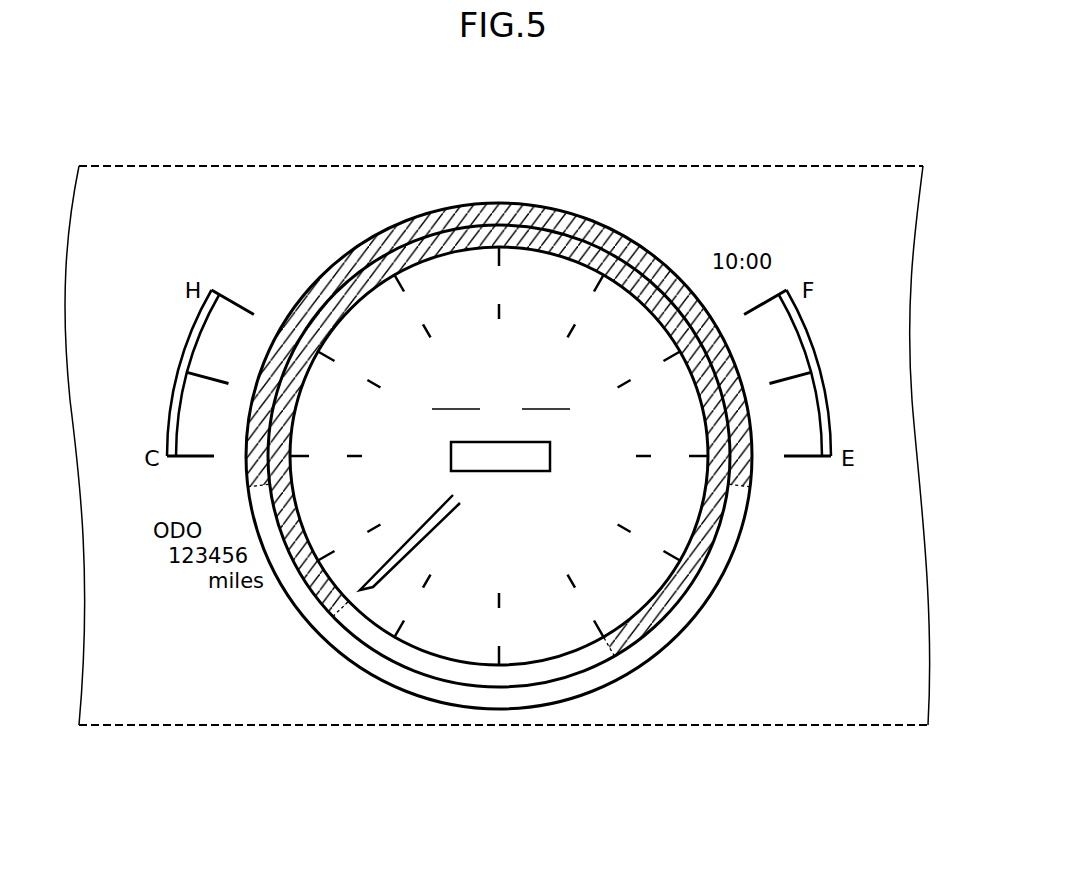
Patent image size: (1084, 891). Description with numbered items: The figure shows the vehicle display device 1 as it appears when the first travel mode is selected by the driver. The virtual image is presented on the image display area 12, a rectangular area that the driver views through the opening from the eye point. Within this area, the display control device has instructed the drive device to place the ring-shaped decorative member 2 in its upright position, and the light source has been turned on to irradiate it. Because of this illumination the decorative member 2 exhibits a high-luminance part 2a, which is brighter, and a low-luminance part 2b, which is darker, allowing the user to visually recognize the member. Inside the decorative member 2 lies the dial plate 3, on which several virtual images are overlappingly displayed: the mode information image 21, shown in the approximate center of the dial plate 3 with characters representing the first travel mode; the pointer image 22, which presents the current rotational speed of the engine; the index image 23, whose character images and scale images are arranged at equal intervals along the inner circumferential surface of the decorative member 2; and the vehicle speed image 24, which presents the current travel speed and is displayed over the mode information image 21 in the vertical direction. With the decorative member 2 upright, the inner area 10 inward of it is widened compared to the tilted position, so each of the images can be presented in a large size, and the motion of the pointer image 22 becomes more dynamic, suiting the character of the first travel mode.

The vehicle display device 1 is at (216, 148).
The decorative member 2 is at (381, 222).
The high-luminance part 2a is at (500, 697).
The low-luminance part 2b is at (503, 215).
The dial plate 3 is at (542, 275).
The inner area 10 is at (634, 324).
The image display area 12 is at (752, 164).
The mode information image 21 is at (552, 457).
The pointer image 22 is at (386, 580).
The index image 23 is at (362, 399).
The vehicle speed image 24 is at (473, 327).